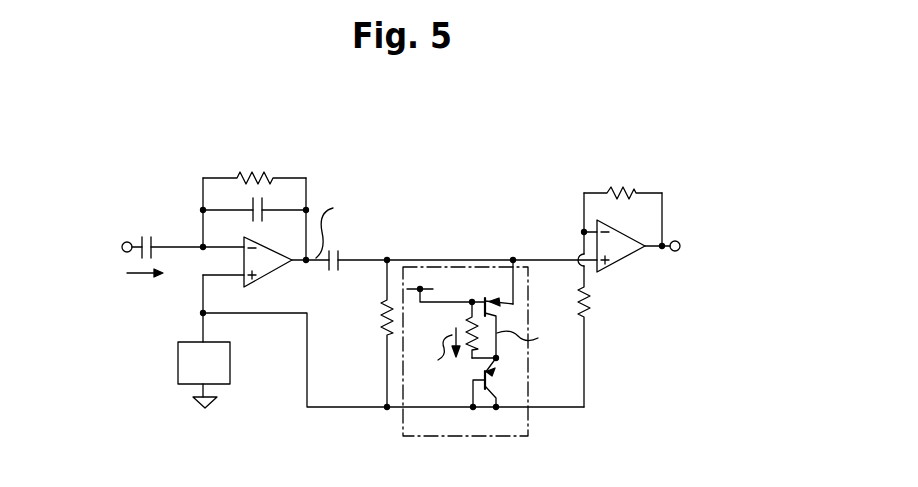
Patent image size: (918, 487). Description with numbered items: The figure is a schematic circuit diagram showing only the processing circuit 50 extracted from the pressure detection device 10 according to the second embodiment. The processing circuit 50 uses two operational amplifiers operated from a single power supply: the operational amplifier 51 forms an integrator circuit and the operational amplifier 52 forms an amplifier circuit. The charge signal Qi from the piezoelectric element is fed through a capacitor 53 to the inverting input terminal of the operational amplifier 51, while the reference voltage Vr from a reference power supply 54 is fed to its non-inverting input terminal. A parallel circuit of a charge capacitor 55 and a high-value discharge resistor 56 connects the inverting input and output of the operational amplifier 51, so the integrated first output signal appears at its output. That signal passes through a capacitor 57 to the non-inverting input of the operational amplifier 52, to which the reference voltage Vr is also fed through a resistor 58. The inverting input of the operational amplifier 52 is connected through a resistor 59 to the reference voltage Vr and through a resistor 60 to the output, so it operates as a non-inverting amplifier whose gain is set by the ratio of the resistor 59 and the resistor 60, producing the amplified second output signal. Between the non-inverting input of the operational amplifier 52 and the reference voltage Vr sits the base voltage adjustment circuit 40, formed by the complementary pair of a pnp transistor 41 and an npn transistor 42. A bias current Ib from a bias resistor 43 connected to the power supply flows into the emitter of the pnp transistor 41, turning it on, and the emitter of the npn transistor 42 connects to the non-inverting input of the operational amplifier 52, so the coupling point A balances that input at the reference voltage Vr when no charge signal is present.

The pressure detection device 10 is at (584, 137).
The processing circuit 50 is at (480, 179).
The base voltage adjustment circuit 40 is at (528, 424).
The pnp transistor 41 is at (500, 382).
The npn transistor 42 is at (500, 309).
The bias resistor 43 is at (466, 322).
The operational amplifier 51 is at (263, 277).
The operational amplifier 52 is at (623, 258).
The capacitor 53 is at (149, 235).
The reference power supply 54 is at (230, 360).
The charge capacitor 55 is at (254, 219).
The discharge resistor 56 is at (254, 167).
The capacitor 57 is at (336, 274).
The resistor 58 is at (370, 333).
The resistor 59 is at (601, 336).
The resistor 60 is at (623, 181).